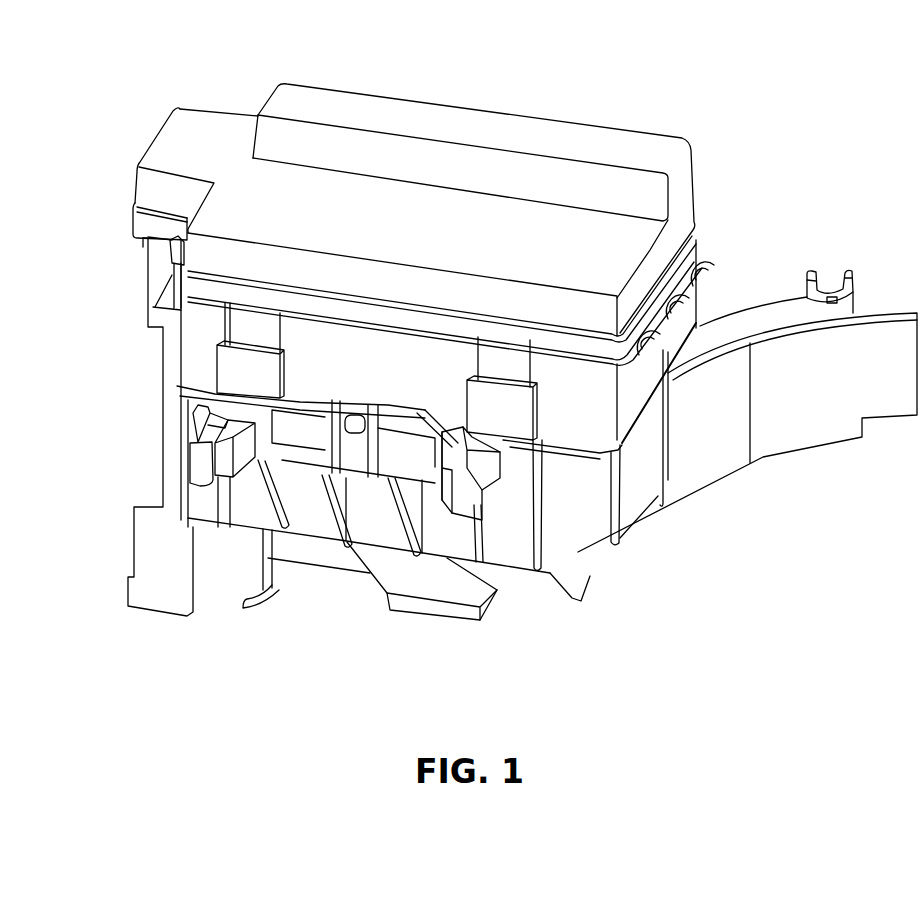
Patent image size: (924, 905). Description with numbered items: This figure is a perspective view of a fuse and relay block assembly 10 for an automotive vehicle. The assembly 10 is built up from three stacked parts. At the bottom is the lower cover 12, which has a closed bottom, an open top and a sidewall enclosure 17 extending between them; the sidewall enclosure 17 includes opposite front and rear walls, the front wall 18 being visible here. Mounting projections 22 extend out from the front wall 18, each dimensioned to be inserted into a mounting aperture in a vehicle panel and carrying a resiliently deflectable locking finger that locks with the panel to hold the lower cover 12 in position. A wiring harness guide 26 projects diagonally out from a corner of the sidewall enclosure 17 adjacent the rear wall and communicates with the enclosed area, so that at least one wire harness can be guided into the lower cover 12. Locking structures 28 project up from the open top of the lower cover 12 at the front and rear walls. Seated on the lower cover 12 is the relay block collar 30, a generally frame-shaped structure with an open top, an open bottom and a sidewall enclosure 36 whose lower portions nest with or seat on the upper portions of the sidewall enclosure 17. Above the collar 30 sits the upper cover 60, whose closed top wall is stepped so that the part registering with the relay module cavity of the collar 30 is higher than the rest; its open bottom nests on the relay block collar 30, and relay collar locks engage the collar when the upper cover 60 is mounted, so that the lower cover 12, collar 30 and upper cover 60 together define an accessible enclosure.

The fuse and relay block assembly 10 is at (639, 101).
The lower cover 12 is at (544, 542).
The sidewall enclosure 17 is at (640, 462).
The front wall 18 is at (505, 537).
The mounting projections 22 is at (202, 473).
The wiring harness guide 26 is at (803, 400).
The locking structures 28 is at (248, 380).
The relay block collar 30 is at (702, 304).
The sidewall enclosure 36 is at (160, 343).
The upper cover 60 is at (388, 117).